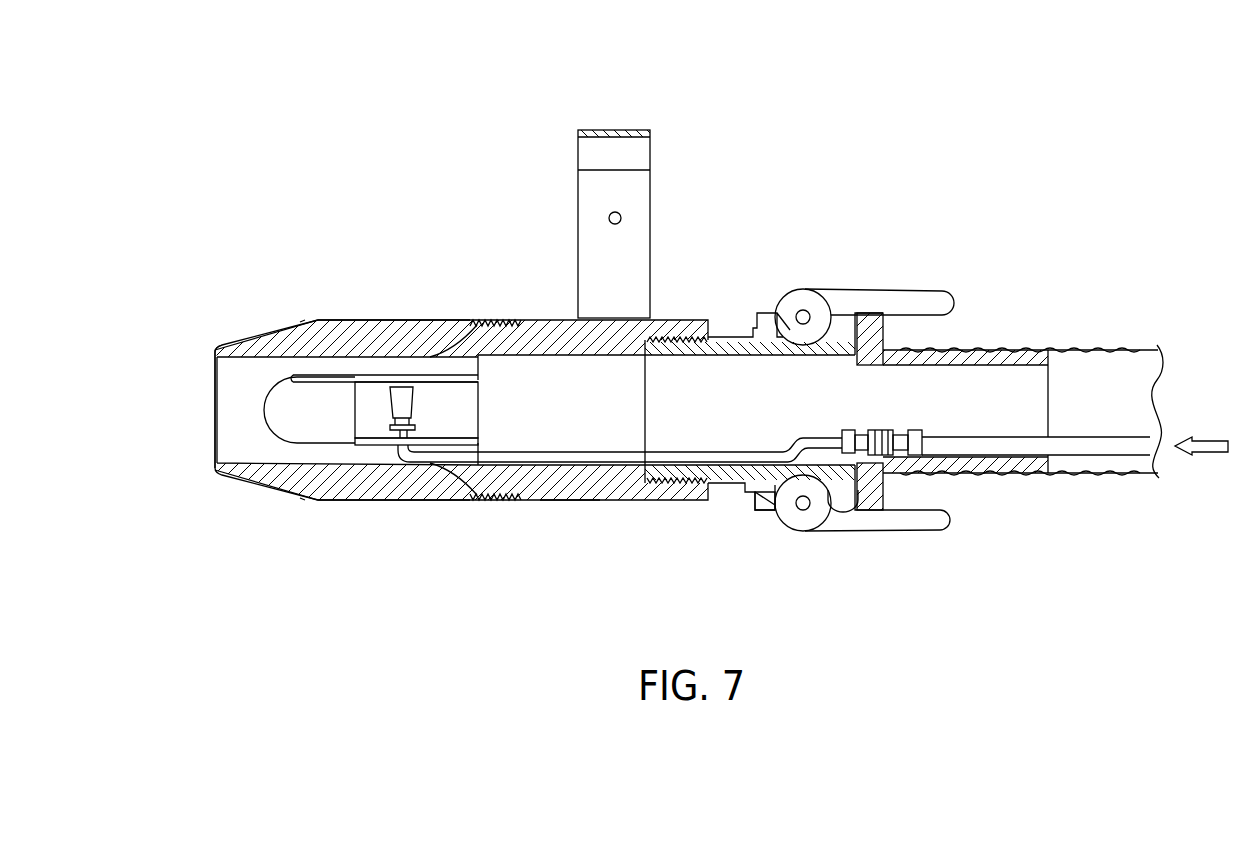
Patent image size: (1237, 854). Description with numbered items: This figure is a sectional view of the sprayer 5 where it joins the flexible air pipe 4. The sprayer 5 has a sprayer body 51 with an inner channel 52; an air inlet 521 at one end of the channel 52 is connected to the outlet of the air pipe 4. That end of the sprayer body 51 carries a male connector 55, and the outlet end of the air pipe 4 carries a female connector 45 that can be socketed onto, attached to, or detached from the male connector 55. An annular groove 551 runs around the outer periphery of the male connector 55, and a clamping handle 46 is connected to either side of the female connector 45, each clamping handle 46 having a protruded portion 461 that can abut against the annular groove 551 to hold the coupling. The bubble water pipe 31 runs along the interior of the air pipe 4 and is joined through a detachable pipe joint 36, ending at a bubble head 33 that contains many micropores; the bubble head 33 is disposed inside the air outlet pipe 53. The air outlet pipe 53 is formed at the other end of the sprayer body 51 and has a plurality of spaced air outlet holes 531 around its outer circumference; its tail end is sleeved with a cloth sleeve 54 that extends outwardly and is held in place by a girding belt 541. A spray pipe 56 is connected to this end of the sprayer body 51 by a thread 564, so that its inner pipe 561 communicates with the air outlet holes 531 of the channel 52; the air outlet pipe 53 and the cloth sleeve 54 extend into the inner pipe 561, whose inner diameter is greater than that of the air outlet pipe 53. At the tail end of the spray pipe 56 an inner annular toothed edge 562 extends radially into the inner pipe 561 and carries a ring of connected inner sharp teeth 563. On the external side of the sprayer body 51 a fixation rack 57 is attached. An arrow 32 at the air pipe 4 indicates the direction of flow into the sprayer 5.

The air pipe 4 is at (1087, 348).
The sprayer 5 is at (489, 302).
The bubble water pipe 31 is at (620, 463).
The water flow direction 32 is at (1212, 437).
The bubble head 33 is at (395, 385).
The pipe joint 36 is at (903, 467).
The female connector 45 is at (990, 343).
The clamping handle 46 is at (903, 300).
The protruded portion 461 is at (820, 297).
The sprayer body 51 is at (563, 497).
The channel 52 is at (557, 332).
The air inlet 521 is at (647, 380).
The air outlet pipe 53 is at (430, 440).
The air outlet holes 531 is at (472, 325).
The cloth sleeve 54 is at (312, 377).
The girding belt 541 is at (377, 443).
The male connector 55 is at (728, 492).
The annular groove 551 is at (795, 517).
The spray pipe 56 is at (262, 335).
The inner pipe 561 is at (313, 497).
The inner annular toothed edge 562 is at (213, 360).
The inner sharp teeth 563 is at (213, 445).
The thread 564 is at (493, 500).
The fixation rack 57 is at (635, 190).